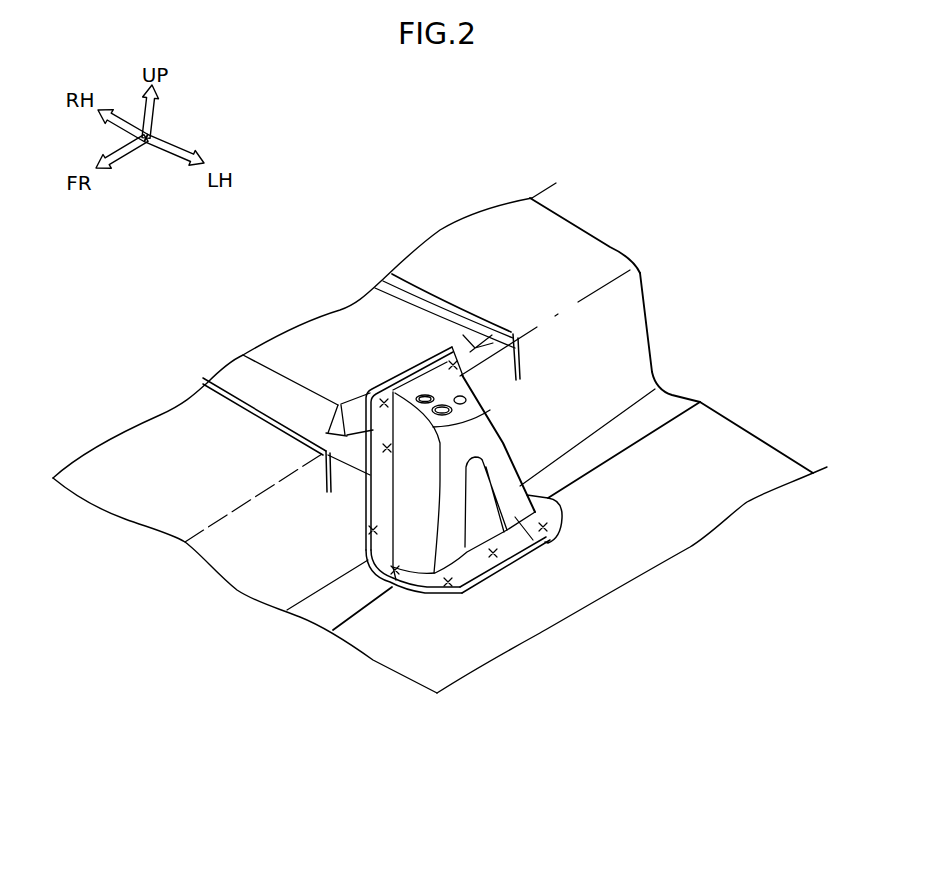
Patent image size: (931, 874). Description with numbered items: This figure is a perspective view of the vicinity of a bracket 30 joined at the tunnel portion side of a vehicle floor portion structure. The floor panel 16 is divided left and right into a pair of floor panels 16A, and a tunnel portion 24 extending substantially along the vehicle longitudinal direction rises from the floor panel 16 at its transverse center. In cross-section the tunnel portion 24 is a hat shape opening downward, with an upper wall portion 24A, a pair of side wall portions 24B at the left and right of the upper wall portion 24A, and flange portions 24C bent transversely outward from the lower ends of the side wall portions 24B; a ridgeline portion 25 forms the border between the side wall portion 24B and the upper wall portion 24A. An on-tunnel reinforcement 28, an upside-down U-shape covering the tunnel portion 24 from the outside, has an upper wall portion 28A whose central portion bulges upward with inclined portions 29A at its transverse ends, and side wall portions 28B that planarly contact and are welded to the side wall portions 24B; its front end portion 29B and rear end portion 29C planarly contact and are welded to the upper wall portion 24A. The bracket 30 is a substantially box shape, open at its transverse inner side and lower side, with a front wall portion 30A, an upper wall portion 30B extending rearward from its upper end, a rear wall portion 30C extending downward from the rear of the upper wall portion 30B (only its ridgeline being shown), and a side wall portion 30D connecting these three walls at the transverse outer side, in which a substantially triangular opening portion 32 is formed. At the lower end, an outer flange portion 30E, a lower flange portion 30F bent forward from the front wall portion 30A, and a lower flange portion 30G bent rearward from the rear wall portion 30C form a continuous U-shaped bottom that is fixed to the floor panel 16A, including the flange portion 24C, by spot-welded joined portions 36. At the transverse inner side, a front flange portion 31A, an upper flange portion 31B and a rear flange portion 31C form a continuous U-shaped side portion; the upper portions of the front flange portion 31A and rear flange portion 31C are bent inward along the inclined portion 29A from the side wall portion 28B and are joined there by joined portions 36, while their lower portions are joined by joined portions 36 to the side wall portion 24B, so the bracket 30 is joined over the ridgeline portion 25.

The floor panel 16 is at (756, 437).
The floor panel 16A is at (727, 453).
The tunnel portion 24 is at (570, 262).
The upper wall portion 24A is at (543, 237).
The side wall portion 24B is at (630, 325).
The flange portion 24C is at (663, 412).
The ridgeline portion 25 is at (213, 527).
The on-tunnel reinforcement 28 is at (300, 366).
The upper wall portion 28A is at (343, 337).
The side wall portion 28B is at (332, 468).
The inclined portion 29A is at (480, 327).
The front end portion 29B is at (233, 392).
The rear end portion 29C is at (410, 283).
The bracket 30 is at (492, 593).
The front wall portion 30A is at (365, 548).
The upper wall portion 30B is at (435, 383).
The rear wall portion 30C is at (510, 430).
The side wall portion 30D is at (553, 540).
The outer flange portion 30E is at (485, 591).
The lower flange portion 30F is at (389, 588).
The lower flange portion 30G is at (553, 502).
The front flange portion 31A is at (405, 497).
The upper flange portion 31B is at (411, 388).
The rear flange portion 31C is at (478, 397).
The opening portion 32 is at (540, 471).
The joined portion 36 is at (380, 398).